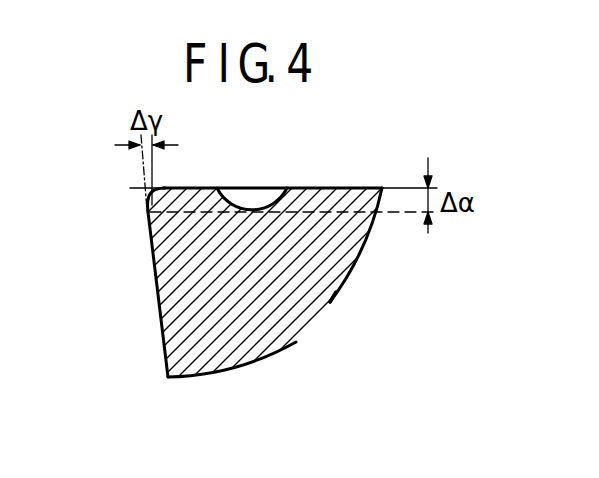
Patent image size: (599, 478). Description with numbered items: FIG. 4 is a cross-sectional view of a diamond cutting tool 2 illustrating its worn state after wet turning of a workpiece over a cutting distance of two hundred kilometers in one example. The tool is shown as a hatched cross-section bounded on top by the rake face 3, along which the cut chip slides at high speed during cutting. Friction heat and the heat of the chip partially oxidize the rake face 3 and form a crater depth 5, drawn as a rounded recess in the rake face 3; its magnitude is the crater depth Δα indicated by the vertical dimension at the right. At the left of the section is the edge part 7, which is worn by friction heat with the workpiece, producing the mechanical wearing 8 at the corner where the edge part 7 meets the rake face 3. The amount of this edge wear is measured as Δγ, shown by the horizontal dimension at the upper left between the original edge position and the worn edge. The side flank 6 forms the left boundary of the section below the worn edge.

The diamond cutting tool 2 is at (240, 323).
The rake face 3 is at (331, 188).
The crater depth 5 is at (245, 200).
The side flank 6 is at (157, 309).
The edge part 7 is at (128, 188).
The mechanical wearing 8 is at (156, 190).